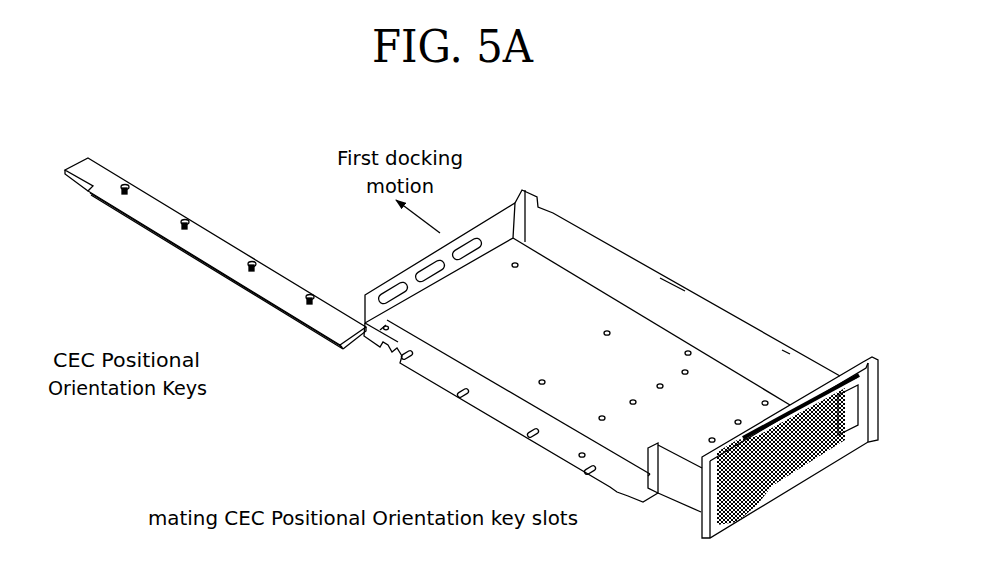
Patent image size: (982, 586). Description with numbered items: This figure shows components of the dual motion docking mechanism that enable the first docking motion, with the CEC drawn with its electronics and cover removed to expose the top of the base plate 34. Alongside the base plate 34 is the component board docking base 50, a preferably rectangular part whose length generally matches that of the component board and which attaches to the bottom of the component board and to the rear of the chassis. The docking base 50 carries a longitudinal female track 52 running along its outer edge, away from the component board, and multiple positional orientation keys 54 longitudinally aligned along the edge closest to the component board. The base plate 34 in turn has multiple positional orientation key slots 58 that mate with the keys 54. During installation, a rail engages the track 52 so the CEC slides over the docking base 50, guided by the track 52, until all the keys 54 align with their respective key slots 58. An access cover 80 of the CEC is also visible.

The component board docking base 50 is at (79, 158).
The longitudinal female track 52 is at (206, 221).
The positional orientation keys 54 is at (304, 301).
The base plate 34 is at (563, 324).
The positional orientation key slots 58 is at (586, 473).
The access cover 80 is at (807, 470).